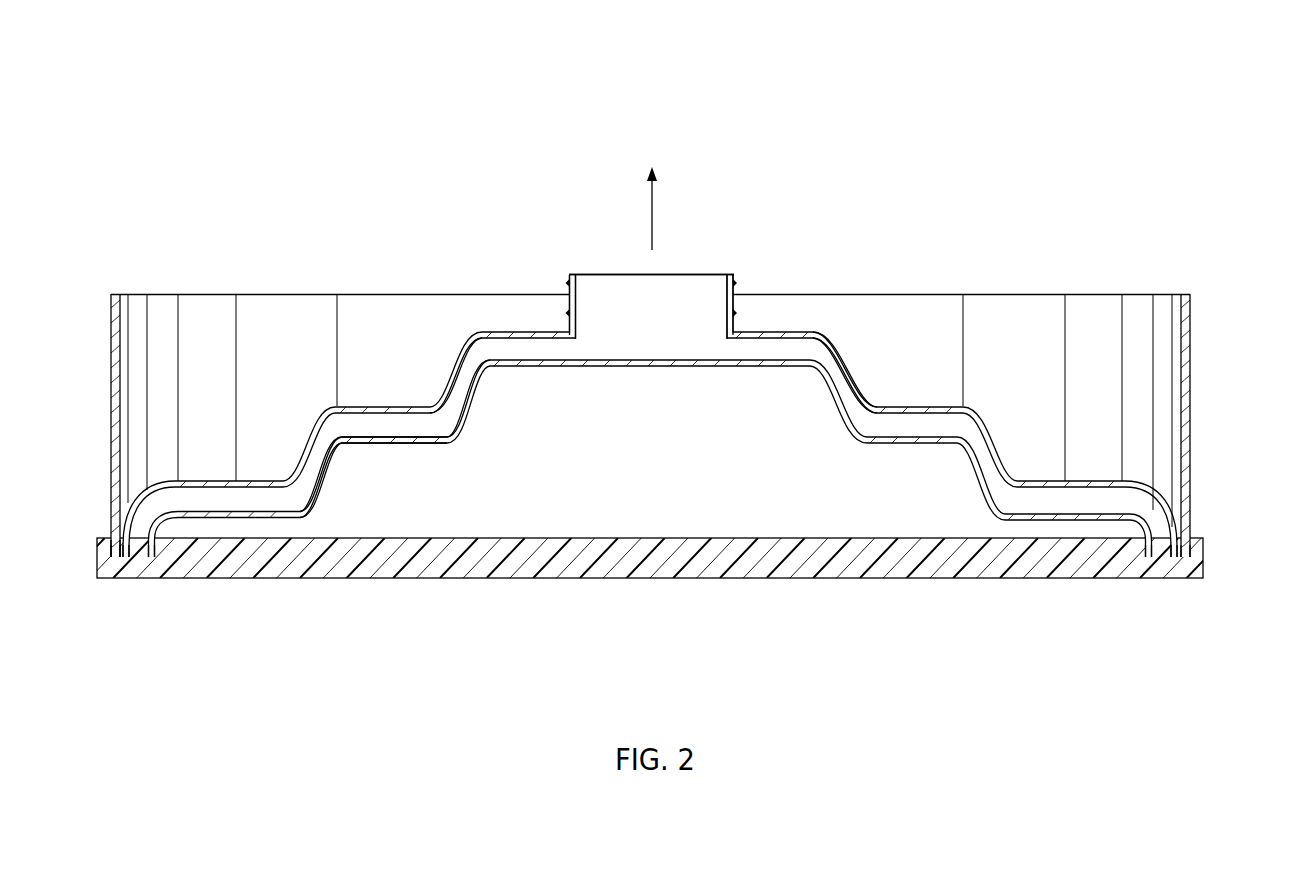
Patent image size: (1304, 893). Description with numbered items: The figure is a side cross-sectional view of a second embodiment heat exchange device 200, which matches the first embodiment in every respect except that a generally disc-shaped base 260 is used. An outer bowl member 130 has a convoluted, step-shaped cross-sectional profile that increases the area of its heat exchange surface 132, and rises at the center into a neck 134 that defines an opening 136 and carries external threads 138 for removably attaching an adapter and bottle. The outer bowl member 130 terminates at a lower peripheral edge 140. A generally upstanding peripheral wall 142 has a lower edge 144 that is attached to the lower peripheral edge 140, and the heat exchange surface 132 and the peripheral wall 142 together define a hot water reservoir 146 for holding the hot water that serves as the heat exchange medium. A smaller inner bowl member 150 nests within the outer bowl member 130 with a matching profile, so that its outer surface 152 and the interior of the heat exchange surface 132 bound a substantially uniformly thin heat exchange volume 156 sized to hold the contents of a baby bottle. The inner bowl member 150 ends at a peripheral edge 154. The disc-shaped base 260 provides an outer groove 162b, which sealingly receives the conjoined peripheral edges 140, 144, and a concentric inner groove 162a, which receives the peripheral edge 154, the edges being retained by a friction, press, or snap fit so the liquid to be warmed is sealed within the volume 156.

The heat exchange device 200 is at (917, 92).
The outer bowl member 130 is at (797, 330).
The heat exchange surface 132 is at (880, 407).
The neck 134 is at (572, 275).
The opening 136 is at (645, 285).
The external threads 138 is at (736, 288).
The lower peripheral edge 140 is at (127, 552).
The peripheral wall 142 is at (126, 294).
The lower edge 144 is at (117, 558).
The hot water reservoir 146 is at (250, 377).
The inner bowl member 150 is at (740, 370).
The outer surface 152 is at (410, 435).
The peripheral edge 154 is at (152, 552).
The heat exchange volume 156 is at (438, 410).
The inner groove 162a is at (152, 550).
The outer groove 162b is at (109, 552).
The disc-shaped base 260 is at (703, 578).